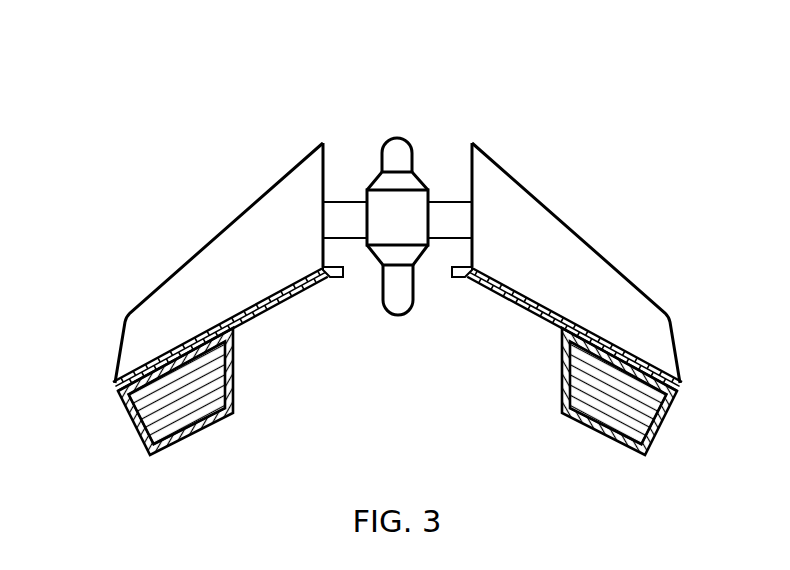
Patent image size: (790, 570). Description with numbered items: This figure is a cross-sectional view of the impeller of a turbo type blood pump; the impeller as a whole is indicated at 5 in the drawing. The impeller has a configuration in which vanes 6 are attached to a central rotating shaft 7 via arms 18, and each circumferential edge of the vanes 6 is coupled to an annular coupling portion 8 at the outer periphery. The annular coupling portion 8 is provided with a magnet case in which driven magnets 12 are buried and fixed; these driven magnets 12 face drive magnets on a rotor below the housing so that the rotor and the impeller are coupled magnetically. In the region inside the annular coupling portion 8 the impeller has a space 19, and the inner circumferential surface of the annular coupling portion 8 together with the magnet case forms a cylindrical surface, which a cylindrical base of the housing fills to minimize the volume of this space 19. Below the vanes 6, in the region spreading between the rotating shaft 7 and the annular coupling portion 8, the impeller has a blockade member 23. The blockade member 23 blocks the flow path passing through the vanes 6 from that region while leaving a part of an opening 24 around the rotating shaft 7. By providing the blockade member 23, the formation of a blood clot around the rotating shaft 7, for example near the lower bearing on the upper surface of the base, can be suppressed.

The electrical connection box / fuse holder assembly 5 is at (275, 88).
The vanes 6 is at (575, 242).
The rotating shaft 7 is at (398, 138).
The annular coupling portion 8 is at (563, 333).
The driven magnets 12 is at (133, 432).
The arms 18 is at (353, 215).
The space 19 is at (492, 375).
The blockade member 23 is at (283, 303).
The opening 24 is at (431, 272).